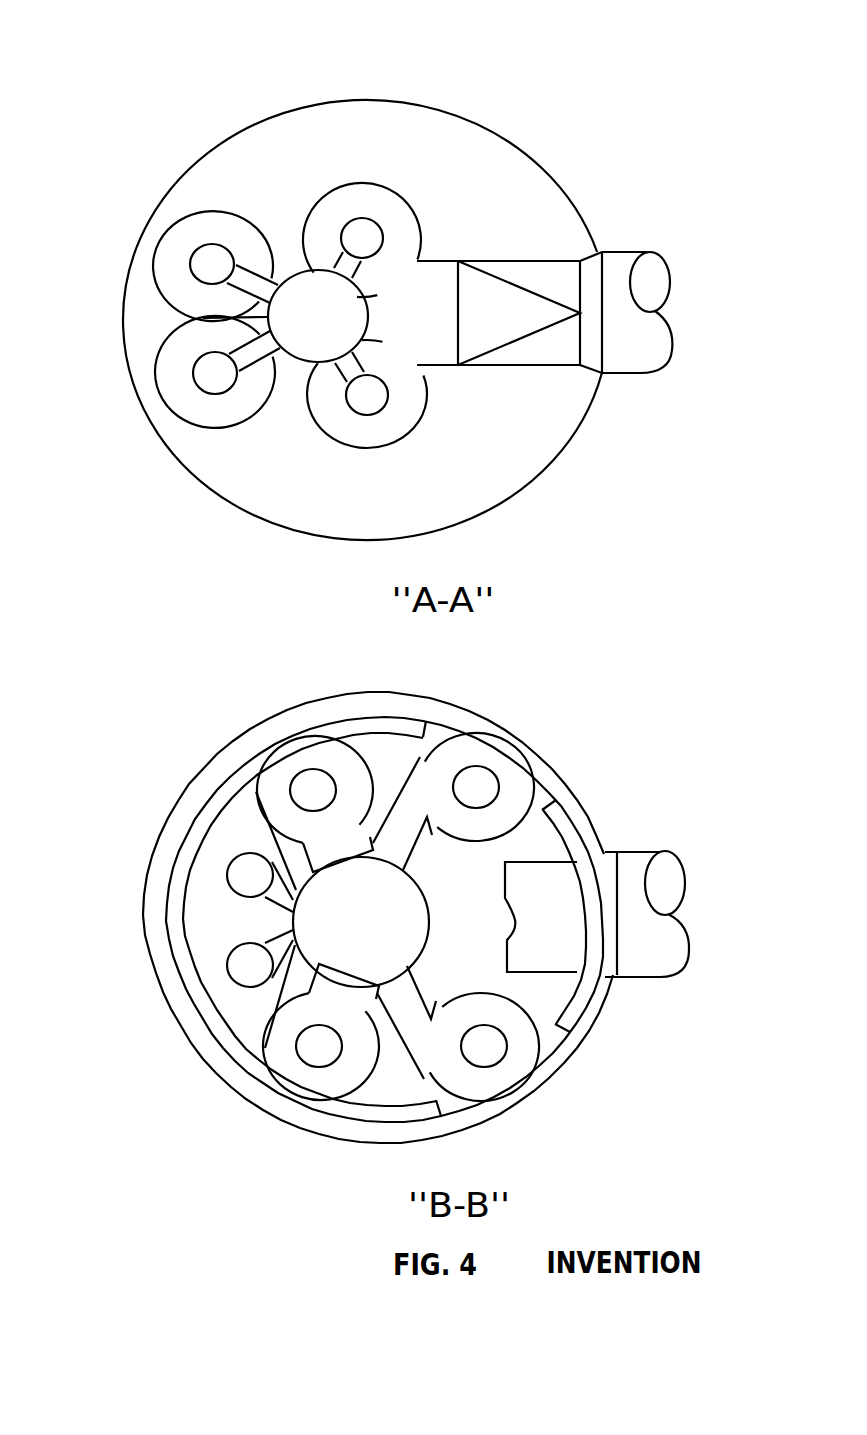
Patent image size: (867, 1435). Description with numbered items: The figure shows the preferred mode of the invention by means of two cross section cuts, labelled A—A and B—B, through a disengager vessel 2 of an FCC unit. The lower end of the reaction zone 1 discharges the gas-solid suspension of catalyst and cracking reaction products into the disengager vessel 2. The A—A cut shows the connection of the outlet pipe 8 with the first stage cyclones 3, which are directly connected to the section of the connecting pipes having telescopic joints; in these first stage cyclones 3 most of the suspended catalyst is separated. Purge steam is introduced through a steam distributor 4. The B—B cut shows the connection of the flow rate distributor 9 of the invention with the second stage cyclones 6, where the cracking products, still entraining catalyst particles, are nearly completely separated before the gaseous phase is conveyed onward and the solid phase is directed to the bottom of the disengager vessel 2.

The reaction zone 1 is at (670, 355).
The disengager vessel 2 is at (227, 500).
The first stage cyclones 3 is at (385, 186).
The steam distributor 4 is at (423, 718).
The second stage cyclones 6 is at (533, 783).
The outlet pipe 8 is at (291, 276).
The flow rate distributor 9 is at (293, 918).